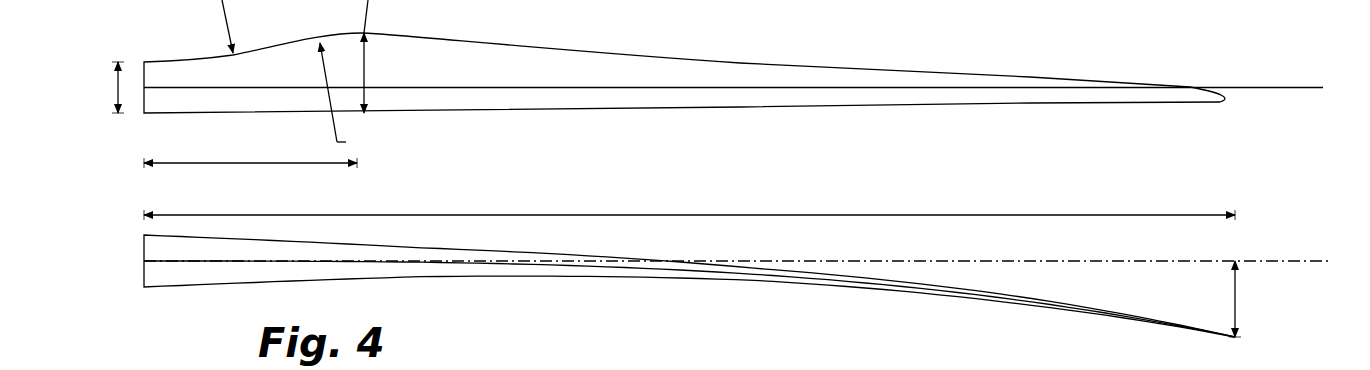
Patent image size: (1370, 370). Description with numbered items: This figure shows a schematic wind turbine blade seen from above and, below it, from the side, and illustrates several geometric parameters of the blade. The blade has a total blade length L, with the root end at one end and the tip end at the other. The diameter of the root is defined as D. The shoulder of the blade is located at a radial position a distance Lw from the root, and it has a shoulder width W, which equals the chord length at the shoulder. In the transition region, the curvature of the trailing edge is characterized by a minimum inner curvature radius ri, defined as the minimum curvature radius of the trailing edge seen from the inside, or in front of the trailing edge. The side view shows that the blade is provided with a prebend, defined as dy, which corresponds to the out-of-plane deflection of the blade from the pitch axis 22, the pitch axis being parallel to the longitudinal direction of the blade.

The pitch axis 22 is at (577, 87).
The root diameter D is at (110, 87).
The shoulder width W is at (381, 73).
The minimum inner curvature radius ri is at (343, 102).
The shoulder position Lw is at (250, 153).
The total blade length L is at (689, 203).
The prebend dy is at (1251, 299).